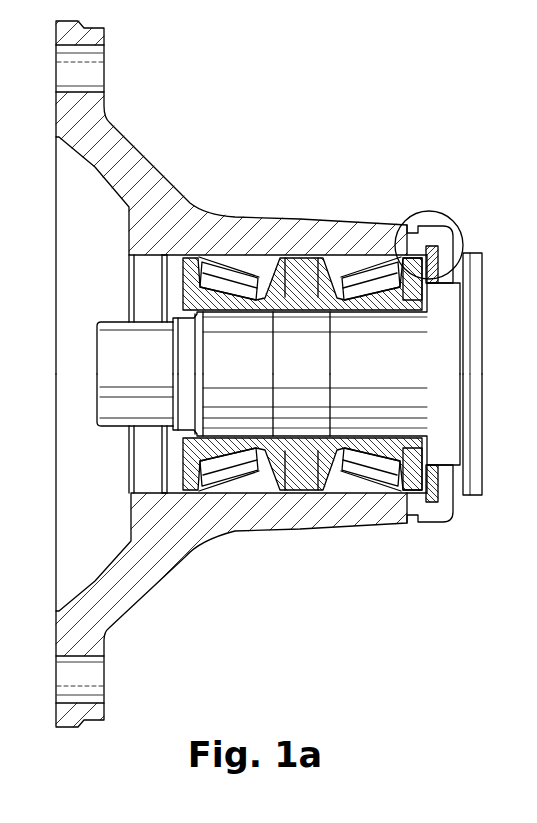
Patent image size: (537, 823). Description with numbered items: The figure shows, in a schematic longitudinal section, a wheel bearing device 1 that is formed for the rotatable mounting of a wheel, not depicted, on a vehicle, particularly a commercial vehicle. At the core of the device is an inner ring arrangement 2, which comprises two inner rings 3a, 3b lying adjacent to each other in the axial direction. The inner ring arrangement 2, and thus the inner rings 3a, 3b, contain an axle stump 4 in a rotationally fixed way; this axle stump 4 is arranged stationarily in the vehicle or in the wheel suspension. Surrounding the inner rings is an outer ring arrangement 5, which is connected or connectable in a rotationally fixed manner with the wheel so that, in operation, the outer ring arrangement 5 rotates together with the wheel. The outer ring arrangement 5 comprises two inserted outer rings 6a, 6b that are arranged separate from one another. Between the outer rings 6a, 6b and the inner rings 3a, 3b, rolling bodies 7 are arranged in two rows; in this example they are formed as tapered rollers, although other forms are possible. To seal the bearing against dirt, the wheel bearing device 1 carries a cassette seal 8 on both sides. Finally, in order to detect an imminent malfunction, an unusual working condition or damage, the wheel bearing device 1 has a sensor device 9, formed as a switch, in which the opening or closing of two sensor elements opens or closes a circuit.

The wheel bearing device 1 is at (243, 131).
The inner ring arrangement 2 is at (300, 334).
The inner ring 3a is at (182, 292).
The inner ring 3b is at (442, 303).
The axle stump 4 is at (113, 349).
The outer ring arrangement 5 is at (121, 137).
The outer ring 6a is at (248, 257).
The outer ring 6b is at (352, 255).
The rolling bodies 7 is at (217, 258).
The cassette seal 8 is at (192, 493).
The sensor device 9 is at (447, 214).